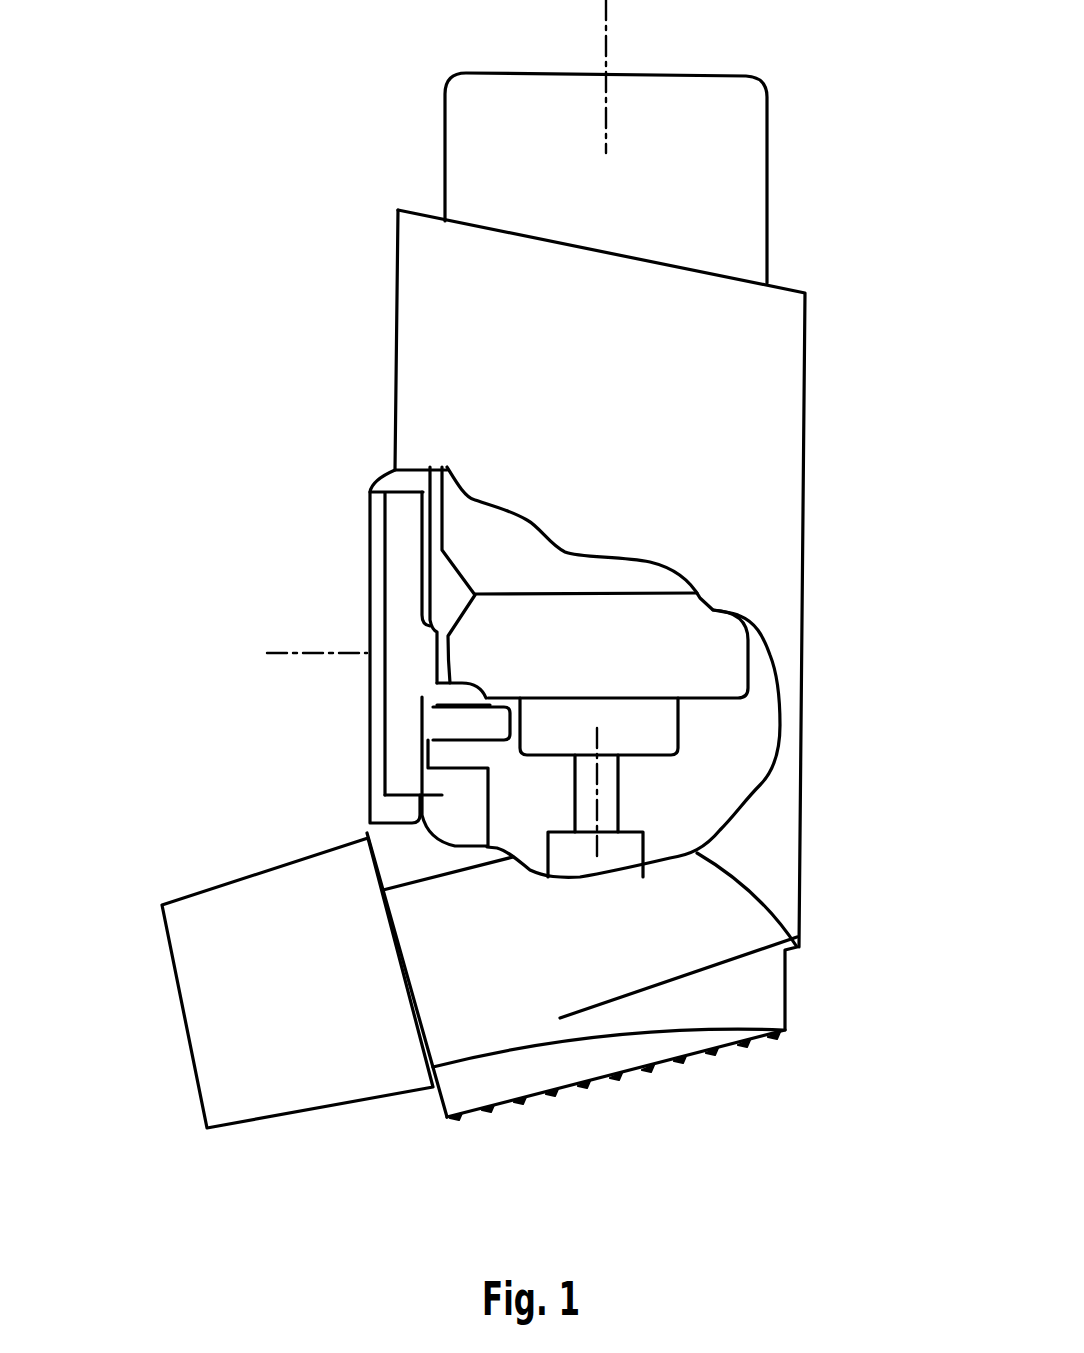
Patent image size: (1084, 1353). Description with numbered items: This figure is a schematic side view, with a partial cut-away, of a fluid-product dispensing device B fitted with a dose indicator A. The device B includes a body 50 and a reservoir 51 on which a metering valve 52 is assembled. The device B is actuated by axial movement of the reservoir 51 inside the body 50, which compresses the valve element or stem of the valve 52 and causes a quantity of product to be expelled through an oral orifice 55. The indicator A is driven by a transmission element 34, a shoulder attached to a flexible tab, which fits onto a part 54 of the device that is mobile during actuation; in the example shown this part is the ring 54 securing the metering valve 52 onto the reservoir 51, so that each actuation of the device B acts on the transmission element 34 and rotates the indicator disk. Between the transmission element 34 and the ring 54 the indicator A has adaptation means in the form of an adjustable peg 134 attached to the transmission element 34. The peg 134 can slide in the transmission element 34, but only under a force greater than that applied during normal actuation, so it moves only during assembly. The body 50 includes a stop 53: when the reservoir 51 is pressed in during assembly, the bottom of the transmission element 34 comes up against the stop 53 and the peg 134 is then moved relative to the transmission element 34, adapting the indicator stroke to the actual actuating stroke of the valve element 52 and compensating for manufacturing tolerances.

The body 50 is at (740, 498).
The reservoir 51 is at (698, 180).
The metering valve 52 is at (610, 795).
The stop 53 is at (365, 808).
The ring 54 is at (483, 653).
The oral orifice 55 is at (220, 1005).
The transmission element 34 is at (462, 715).
The adjustable peg 134 is at (430, 690).
The dose indicator A is at (407, 545).
The dispensing device B is at (700, 453).